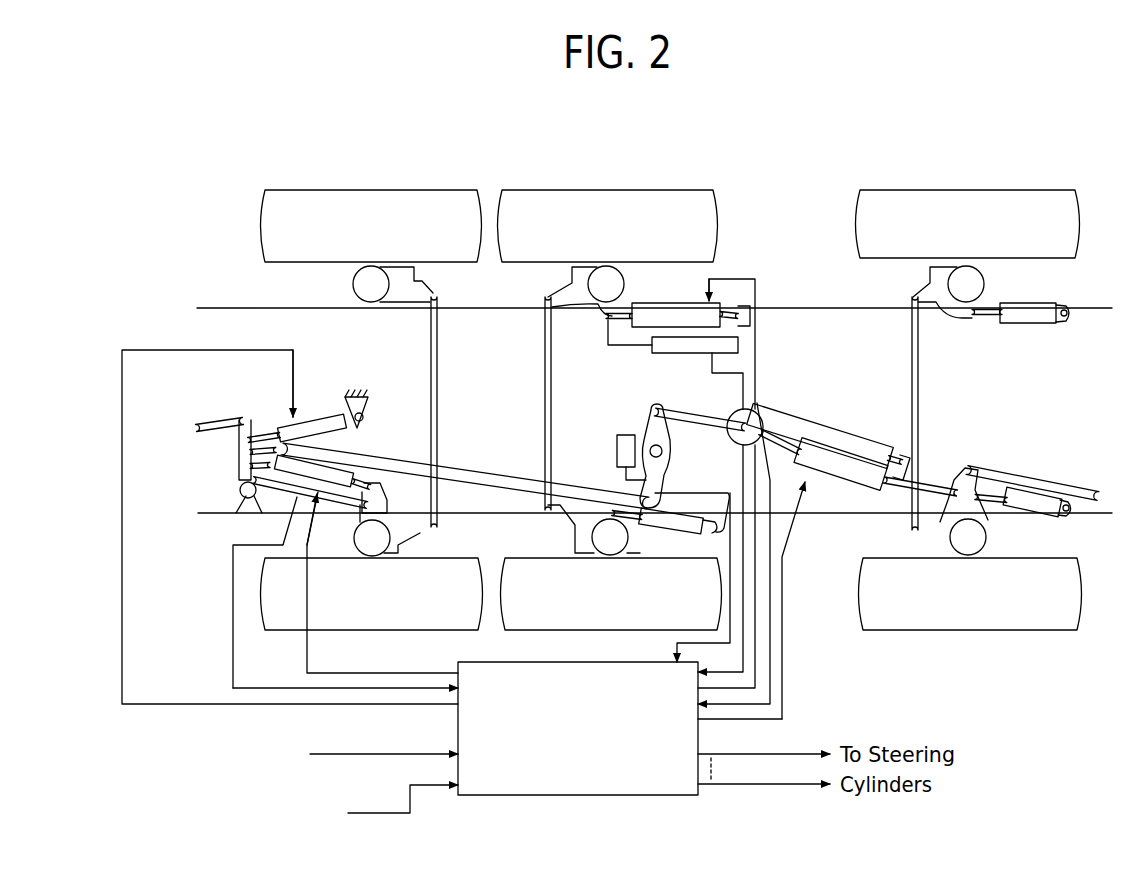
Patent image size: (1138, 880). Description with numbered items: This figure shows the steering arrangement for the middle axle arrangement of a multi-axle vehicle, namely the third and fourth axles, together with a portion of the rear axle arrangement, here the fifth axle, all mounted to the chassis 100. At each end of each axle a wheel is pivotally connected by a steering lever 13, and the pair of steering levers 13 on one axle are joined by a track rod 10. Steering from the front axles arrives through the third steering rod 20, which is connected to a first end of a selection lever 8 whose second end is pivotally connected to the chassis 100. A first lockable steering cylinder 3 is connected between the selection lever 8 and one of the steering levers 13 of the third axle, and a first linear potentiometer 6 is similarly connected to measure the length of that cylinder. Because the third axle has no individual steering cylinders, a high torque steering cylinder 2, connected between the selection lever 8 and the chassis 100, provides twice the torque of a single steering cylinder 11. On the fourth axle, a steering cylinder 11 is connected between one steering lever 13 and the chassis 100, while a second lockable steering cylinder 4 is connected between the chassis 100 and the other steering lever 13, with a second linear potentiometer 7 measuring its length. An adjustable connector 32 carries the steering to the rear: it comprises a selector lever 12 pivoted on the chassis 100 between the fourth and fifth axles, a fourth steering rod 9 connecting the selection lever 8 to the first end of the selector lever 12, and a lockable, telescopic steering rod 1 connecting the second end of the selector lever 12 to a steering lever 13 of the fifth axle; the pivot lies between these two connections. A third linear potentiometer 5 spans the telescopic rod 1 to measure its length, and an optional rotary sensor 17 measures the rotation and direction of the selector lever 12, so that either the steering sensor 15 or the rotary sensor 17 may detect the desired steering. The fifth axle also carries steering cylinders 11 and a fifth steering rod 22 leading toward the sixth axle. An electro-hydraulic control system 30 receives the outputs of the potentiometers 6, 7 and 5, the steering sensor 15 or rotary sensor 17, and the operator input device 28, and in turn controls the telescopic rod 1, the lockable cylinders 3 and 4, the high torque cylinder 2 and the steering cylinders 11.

The lockable, telescopic steering rod 1 is at (834, 480).
The high torque steering cylinder 2 is at (312, 425).
The first lockable steering cylinder 3 is at (347, 478).
The second lockable steering cylinder 4 is at (672, 320).
The third linear potentiometer 5 is at (812, 430).
The first linear potentiometer 6 is at (240, 498).
The second linear potentiometer 7 is at (684, 350).
The selection lever 8 is at (240, 456).
The fourth steering rod 9 is at (478, 470).
The track rod 10 is at (438, 340).
The steering cylinder 11 is at (678, 530).
The selector lever 12 is at (666, 458).
The steering lever 13 is at (422, 280).
The steering sensor 15 is at (308, 807).
The rotary sensor 17 is at (617, 447).
The third steering rod 20 is at (214, 425).
The fifth steering rod 22 is at (1044, 484).
The operator input device 28 is at (306, 770).
The electro-hydraulic control system 30 is at (578, 770).
The adjustable connector 32 is at (622, 430).
The chassis 100 is at (220, 316).